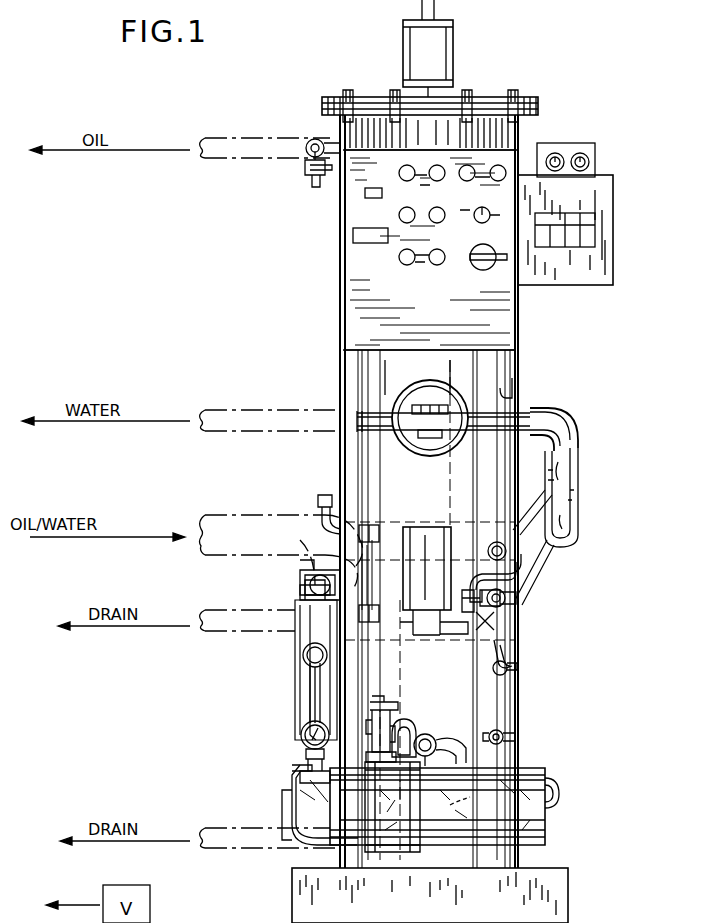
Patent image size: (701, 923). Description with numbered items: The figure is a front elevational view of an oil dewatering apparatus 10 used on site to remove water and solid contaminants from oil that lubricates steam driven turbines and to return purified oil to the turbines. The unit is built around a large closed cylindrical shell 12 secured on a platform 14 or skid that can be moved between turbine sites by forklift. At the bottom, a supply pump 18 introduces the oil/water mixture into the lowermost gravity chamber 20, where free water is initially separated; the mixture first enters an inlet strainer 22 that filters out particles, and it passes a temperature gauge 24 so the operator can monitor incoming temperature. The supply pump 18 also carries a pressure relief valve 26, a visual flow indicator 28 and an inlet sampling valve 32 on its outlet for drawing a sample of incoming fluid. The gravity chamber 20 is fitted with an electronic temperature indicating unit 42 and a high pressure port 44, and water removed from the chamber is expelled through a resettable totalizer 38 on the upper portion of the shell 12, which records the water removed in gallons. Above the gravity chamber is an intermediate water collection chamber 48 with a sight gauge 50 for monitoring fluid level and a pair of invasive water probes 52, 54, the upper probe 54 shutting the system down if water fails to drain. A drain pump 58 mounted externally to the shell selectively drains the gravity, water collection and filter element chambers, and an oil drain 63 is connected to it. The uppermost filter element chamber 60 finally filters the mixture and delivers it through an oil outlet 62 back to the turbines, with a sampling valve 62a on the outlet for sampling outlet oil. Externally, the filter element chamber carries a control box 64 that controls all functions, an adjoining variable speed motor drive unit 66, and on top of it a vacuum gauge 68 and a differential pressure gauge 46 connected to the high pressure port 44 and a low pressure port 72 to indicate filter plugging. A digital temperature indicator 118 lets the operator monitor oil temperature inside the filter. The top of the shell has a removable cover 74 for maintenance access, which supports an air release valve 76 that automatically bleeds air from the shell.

The apparatus 10 is at (348, 82).
The shell 12 is at (336, 398).
The platform 14 is at (557, 886).
The supply pump 18 is at (535, 797).
The gravity chamber 20 is at (518, 702).
The inlet strainer 22 is at (290, 678).
The temperature gauge 24 is at (300, 736).
The pressure relief valve 26 is at (414, 815).
The visual flow indicator 28 is at (440, 774).
The inlet sampling valve 32 is at (383, 700).
The resettable totalizer 38 is at (430, 400).
The electronic temperature indicating unit 42 is at (510, 737).
The high pressure port 44 is at (510, 666).
The differential pressure gauge 46 is at (589, 162).
The water collection chamber 48 is at (343, 571).
The sight gauge 50 is at (370, 520).
The invasive water probe 52 is at (510, 606).
The invasive water probe 54 is at (505, 546).
The drain pump 58 is at (422, 530).
The filter element chamber 60 is at (362, 372).
The oil outlet 62 is at (316, 140).
The sampling valve 62a is at (303, 175).
The oil drain 63 is at (318, 498).
The control box 64 is at (348, 322).
The variable speed motor drive unit 66 is at (604, 262).
The vacuum gauge 68 is at (557, 152).
The low pressure port 72 is at (525, 400).
The removable cover 74 is at (498, 94).
The air release valve 76 is at (453, 39).
The digital temperature indicator 118 is at (353, 235).